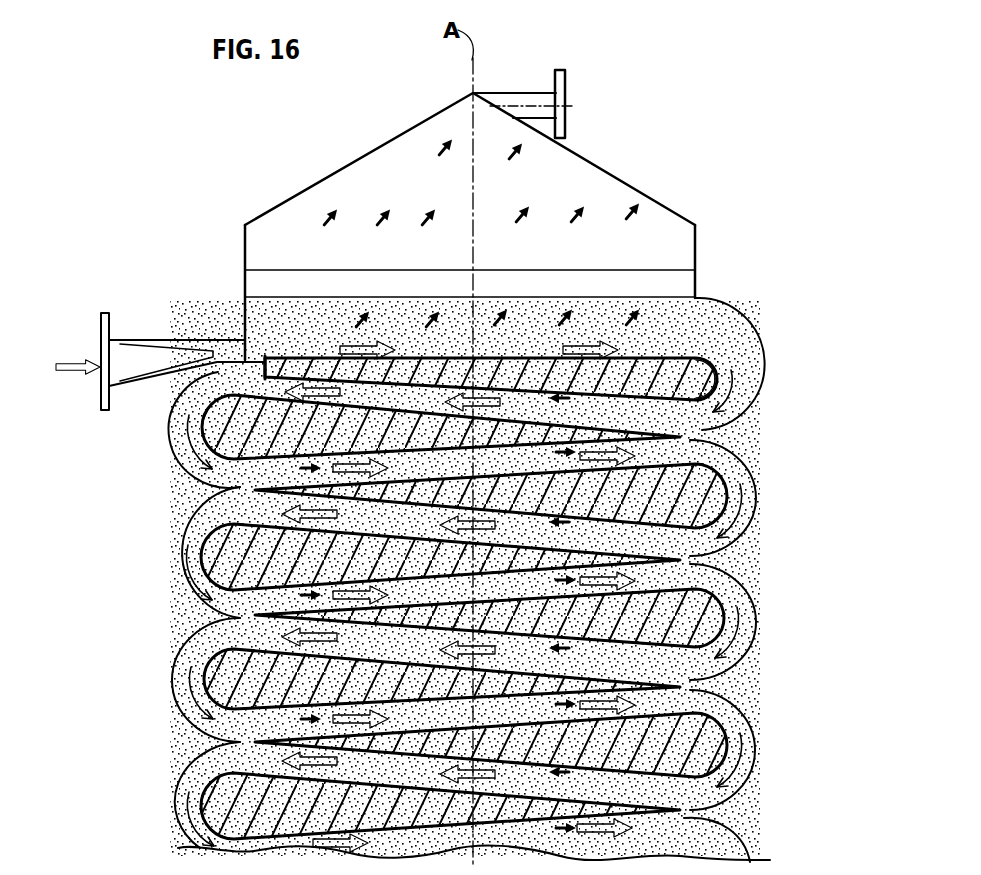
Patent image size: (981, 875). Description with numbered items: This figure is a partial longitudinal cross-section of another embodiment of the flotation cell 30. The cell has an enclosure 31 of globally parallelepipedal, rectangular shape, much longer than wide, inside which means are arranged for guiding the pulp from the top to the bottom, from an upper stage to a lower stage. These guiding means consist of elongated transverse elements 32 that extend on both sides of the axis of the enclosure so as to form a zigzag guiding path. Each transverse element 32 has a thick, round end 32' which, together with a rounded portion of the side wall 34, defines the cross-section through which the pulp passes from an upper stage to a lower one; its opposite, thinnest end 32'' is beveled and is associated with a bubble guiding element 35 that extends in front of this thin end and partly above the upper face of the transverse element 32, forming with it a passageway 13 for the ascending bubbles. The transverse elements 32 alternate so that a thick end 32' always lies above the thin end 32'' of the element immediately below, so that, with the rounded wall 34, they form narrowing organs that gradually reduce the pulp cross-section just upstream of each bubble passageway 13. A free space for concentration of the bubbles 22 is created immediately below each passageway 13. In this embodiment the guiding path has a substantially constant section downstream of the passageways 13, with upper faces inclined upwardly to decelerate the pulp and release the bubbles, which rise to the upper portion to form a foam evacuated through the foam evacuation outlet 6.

The foam evacuation outlet 6 is at (565, 95).
The passageway 13 is at (273, 358).
The free space for concentration of the bubbles 22 is at (219, 382).
The flotation cell 30 is at (787, 414).
The enclosure 31 is at (760, 309).
The transverse element 32 is at (481, 608).
The thick end of the transverse element 32' is at (760, 292).
The thin end of the transverse element 32'' is at (229, 263).
The side wall 34 is at (172, 412).
The bubble guiding element 35 is at (264, 362).